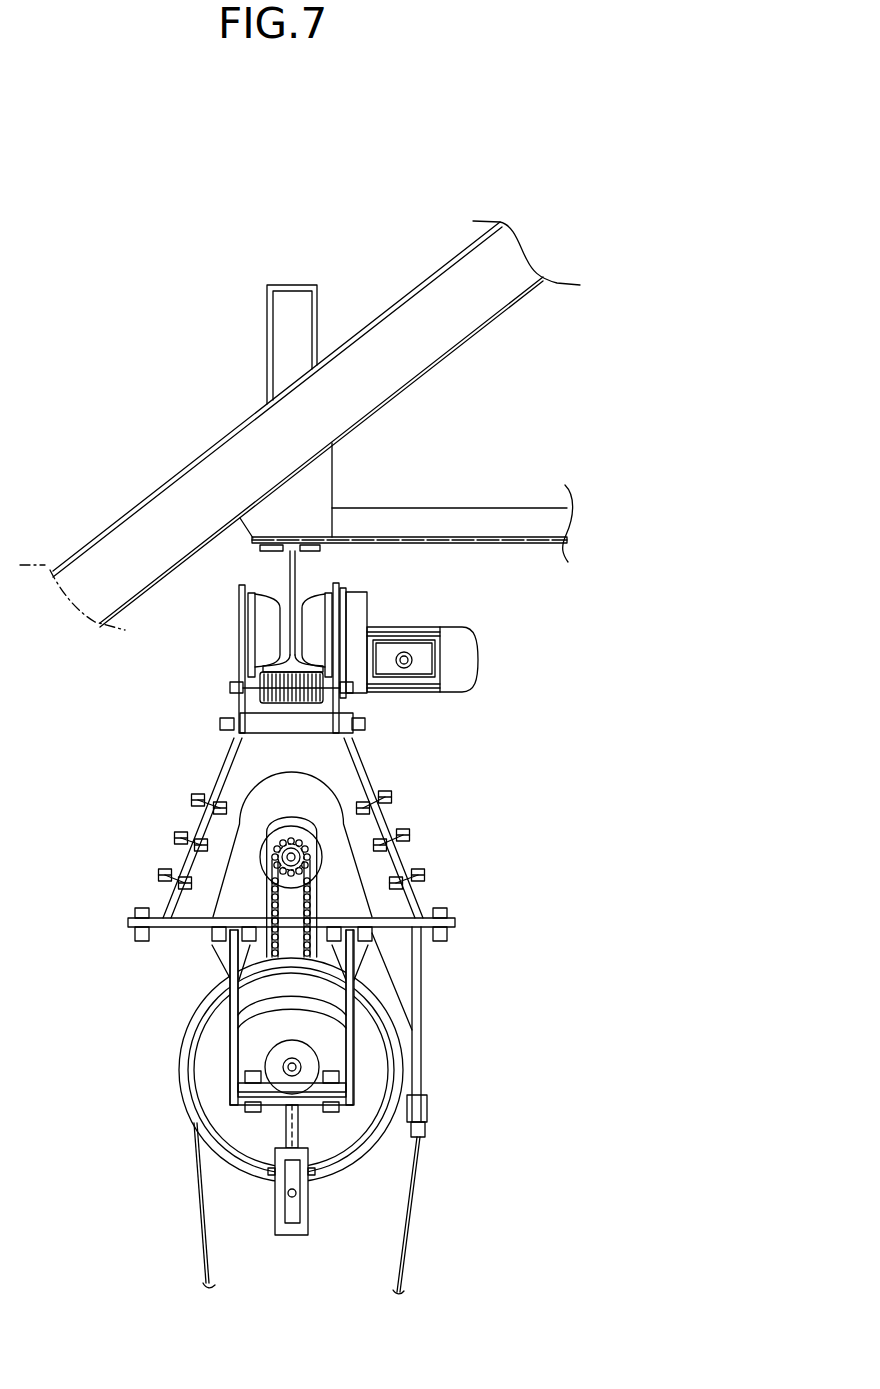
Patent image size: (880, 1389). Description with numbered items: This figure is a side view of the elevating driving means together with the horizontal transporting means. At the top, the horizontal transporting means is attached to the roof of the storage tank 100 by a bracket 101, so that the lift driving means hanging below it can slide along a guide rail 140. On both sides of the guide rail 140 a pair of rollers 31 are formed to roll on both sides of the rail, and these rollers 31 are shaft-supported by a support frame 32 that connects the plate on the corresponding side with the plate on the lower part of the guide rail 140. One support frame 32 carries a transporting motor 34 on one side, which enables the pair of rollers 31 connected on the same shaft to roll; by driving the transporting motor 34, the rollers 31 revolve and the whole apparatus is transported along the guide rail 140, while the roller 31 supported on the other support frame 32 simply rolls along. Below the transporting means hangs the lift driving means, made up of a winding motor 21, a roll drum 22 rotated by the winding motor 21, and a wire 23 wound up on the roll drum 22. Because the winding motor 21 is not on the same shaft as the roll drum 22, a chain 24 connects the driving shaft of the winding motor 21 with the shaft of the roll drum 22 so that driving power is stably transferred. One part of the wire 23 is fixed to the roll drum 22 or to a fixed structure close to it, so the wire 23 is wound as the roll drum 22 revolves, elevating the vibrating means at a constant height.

The storage tank 100 is at (210, 420).
The bracket 101 is at (315, 487).
The guide rail 140 is at (290, 566).
The rollers 31 is at (313, 638).
The support frame 32 is at (342, 700).
The transporting motor 34 is at (458, 658).
The winding motor 21 is at (307, 833).
The chain 24 is at (310, 890).
The roll drum 22 is at (370, 1058).
The wire 23 is at (200, 1238).